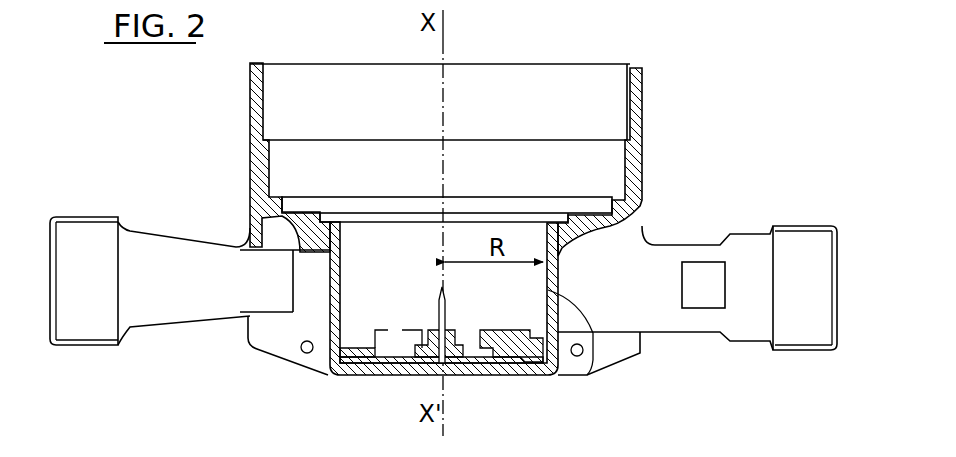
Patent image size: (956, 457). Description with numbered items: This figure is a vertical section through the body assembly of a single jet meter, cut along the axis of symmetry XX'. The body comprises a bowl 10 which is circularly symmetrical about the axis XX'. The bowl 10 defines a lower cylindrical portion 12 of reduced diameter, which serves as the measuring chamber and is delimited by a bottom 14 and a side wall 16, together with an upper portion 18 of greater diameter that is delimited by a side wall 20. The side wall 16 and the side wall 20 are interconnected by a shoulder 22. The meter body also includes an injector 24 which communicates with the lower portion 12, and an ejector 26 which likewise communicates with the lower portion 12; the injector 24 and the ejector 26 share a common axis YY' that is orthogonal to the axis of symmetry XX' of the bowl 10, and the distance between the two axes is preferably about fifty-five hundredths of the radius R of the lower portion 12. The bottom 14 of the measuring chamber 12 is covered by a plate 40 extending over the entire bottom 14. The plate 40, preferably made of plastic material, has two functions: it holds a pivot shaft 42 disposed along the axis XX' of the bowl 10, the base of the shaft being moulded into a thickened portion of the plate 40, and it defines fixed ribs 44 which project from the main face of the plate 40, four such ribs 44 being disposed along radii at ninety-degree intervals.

The bowl 10 is at (224, 184).
The lower cylindrical portion 12 is at (357, 317).
The bottom 14 is at (360, 368).
The side wall 16 is at (590, 364).
The upper portion 18 is at (600, 108).
The side wall 20 is at (637, 158).
The shoulder 22 is at (593, 213).
The injector 24 is at (188, 300).
The ejector 26 is at (660, 315).
The plate 40 is at (453, 362).
The pivot shaft 42 is at (485, 362).
The fixed ribs 44 is at (516, 366).